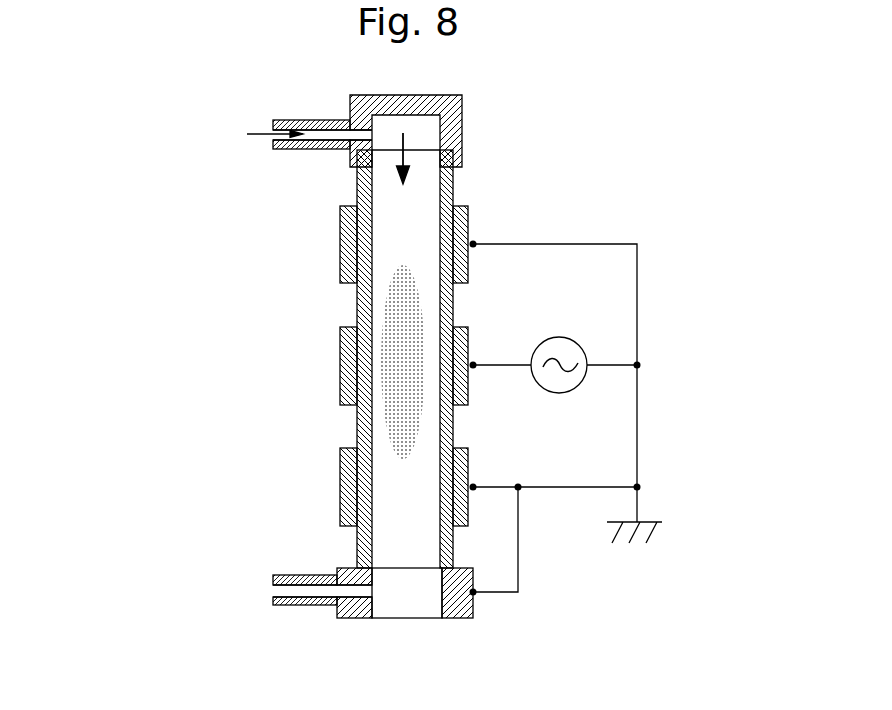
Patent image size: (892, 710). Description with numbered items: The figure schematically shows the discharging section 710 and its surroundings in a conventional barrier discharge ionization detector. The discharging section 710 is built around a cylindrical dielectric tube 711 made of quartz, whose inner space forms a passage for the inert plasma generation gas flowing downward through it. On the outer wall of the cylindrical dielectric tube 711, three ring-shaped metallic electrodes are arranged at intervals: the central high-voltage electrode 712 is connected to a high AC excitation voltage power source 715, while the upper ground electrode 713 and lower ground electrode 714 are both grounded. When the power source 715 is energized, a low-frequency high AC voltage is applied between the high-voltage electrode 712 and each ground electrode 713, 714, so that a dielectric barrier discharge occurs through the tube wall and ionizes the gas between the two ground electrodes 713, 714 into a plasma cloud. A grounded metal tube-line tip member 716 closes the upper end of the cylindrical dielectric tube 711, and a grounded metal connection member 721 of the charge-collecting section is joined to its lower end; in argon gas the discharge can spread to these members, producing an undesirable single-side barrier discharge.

The discharging section 710 is at (135, 530).
The cylindrical dielectric tube 711 is at (455, 183).
The high-voltage electrode 712 is at (340, 360).
The ground electrode 713 is at (340, 240).
The ground electrode 714 is at (340, 478).
The high AC excitation voltage power source 715 is at (567, 336).
The tube-line tip member 716 is at (463, 128).
The connection member 721 is at (475, 612).